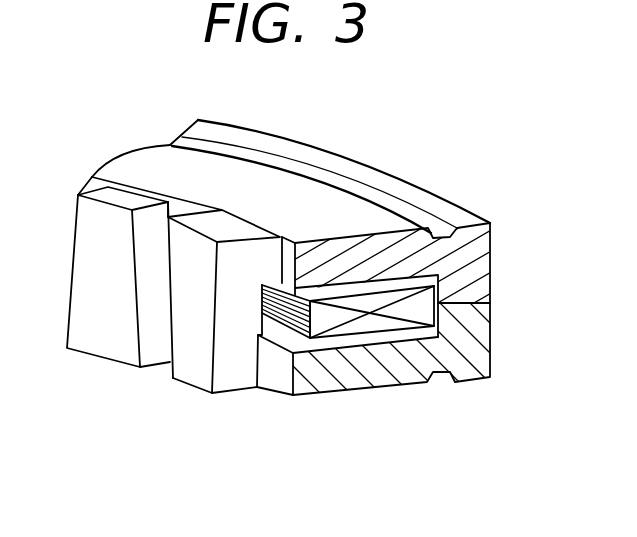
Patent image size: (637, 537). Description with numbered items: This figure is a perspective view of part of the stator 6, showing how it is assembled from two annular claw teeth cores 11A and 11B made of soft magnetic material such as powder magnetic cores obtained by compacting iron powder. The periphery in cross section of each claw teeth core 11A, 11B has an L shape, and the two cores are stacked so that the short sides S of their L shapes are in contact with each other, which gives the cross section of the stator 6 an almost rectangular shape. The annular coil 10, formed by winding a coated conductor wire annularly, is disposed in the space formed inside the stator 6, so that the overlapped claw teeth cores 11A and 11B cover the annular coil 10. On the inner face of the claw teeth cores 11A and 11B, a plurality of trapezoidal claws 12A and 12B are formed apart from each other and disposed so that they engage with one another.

The stator 6 is at (406, 131).
The annular coil 10 is at (364, 325).
The claw teeth core 11A is at (161, 166).
The claw teeth core 11B is at (440, 354).
The claw 12A is at (203, 360).
The claw 12B is at (113, 317).
The short side S is at (490, 303).